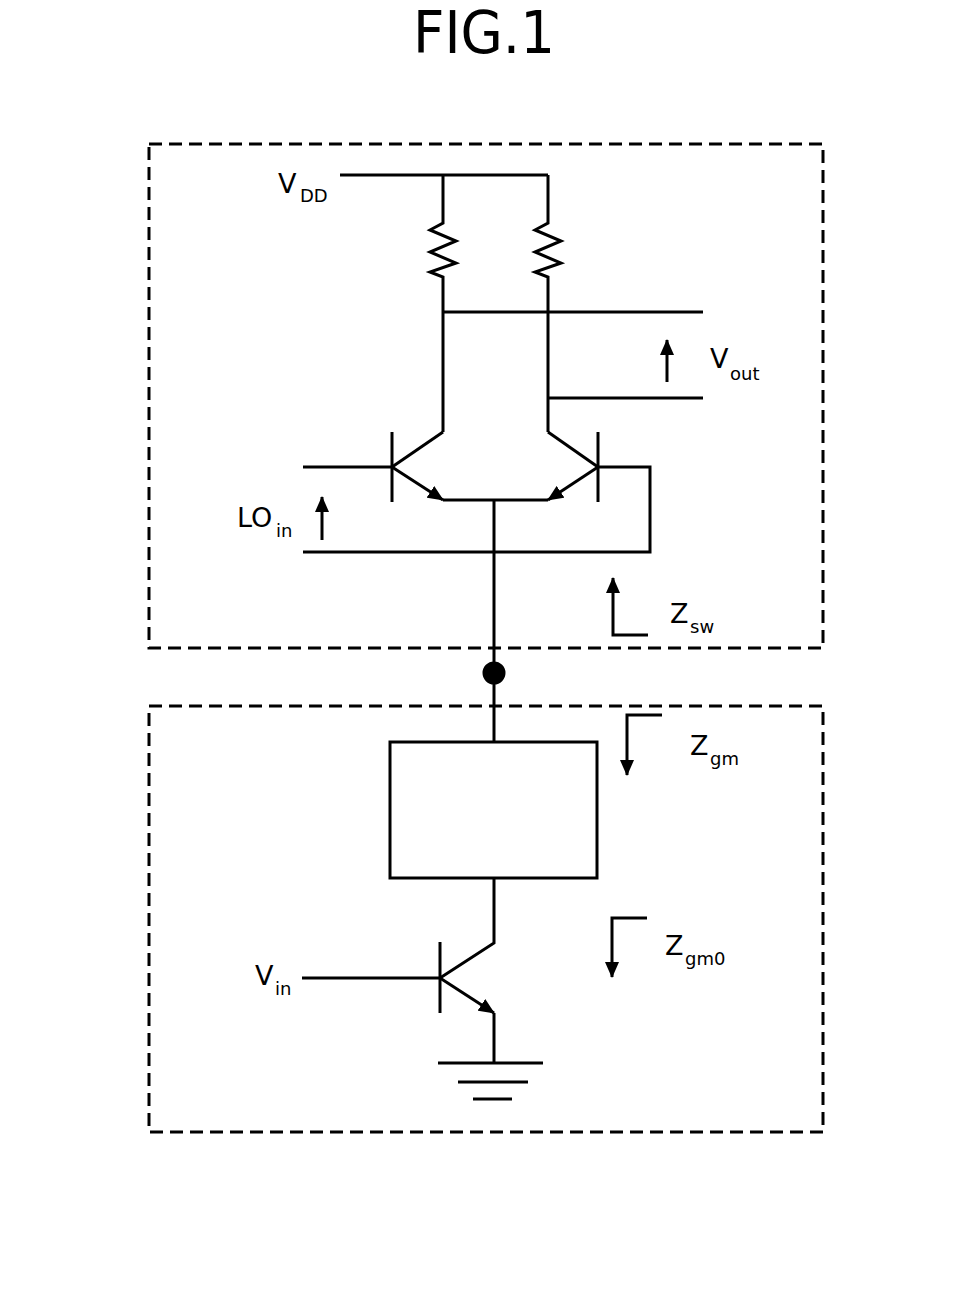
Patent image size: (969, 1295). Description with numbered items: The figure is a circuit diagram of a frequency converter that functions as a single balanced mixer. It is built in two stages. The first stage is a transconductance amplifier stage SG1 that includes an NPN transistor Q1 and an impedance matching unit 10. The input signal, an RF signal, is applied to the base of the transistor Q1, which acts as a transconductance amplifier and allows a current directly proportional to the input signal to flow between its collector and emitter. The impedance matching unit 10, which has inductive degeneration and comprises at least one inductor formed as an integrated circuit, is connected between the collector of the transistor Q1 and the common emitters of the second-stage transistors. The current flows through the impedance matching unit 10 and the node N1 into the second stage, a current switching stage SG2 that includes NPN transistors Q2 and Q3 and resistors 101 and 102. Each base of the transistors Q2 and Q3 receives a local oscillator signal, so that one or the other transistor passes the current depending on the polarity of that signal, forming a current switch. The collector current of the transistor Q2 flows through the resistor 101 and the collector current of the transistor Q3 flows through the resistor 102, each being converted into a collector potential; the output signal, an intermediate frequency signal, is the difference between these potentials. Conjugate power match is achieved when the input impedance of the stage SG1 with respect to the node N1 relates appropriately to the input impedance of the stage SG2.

The resistor 101 is at (420, 256).
The resistor 102 is at (568, 258).
The NPN transistor Q2 is at (420, 440).
The NPN transistor Q3 is at (578, 475).
The node N1 is at (484, 673).
The impedance matching unit 10 is at (390, 840).
The NPN transistor Q1 is at (475, 985).
The transconductance amplifier stage SG1 is at (148, 1015).
The current switching stage SG2 is at (148, 412).